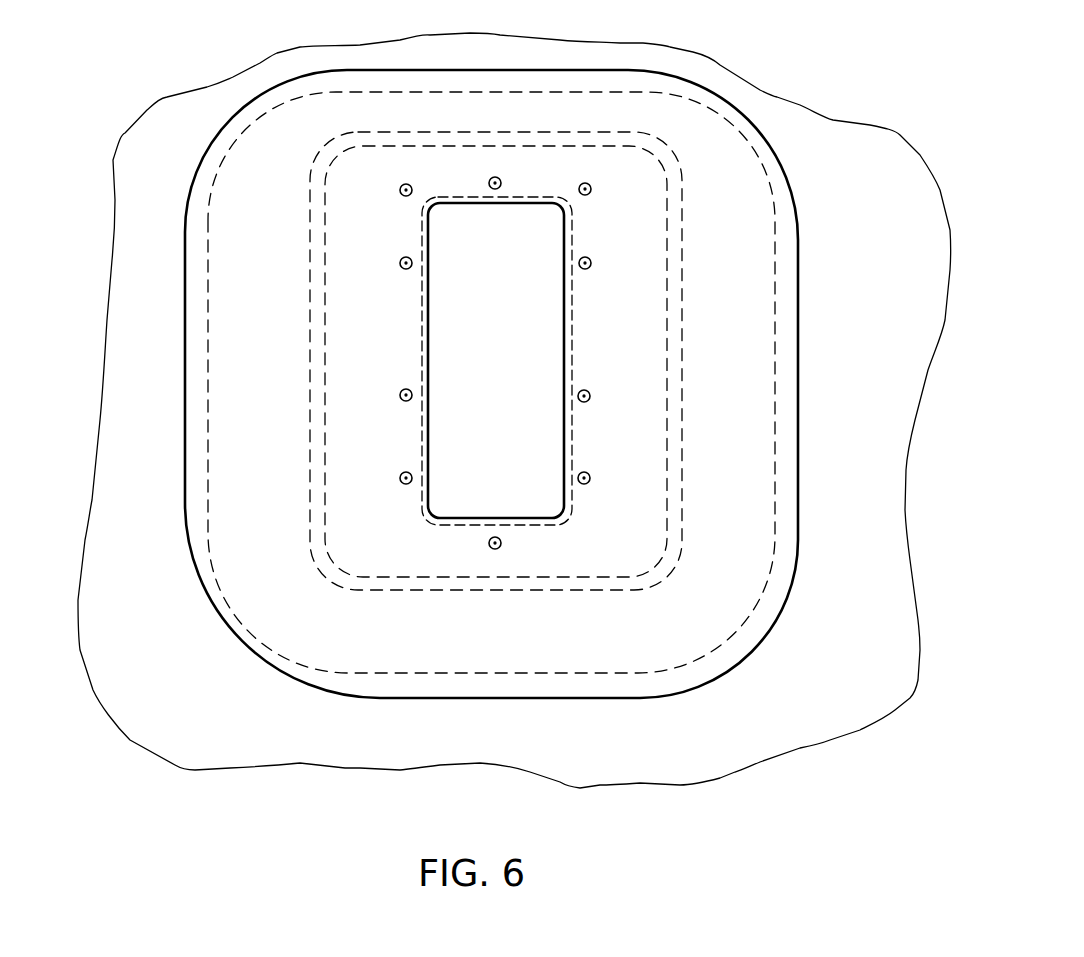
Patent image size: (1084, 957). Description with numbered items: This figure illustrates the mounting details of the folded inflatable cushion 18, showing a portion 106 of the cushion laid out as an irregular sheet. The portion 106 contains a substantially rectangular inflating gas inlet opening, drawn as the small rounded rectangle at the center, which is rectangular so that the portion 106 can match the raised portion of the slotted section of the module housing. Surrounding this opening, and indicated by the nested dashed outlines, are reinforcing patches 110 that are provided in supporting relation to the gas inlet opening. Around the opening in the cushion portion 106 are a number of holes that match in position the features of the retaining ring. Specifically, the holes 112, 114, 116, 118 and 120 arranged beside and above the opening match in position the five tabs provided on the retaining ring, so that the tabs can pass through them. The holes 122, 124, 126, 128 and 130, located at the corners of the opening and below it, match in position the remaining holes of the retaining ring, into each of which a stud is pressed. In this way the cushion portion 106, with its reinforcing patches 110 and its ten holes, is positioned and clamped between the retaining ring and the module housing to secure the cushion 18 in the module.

The folded inflatable cushion 18 is at (147, 153).
The portion 106 is at (313, 122).
The reinforcing patches 110 is at (635, 132).
The hole 112 is at (400, 264).
The hole 114 is at (400, 400).
The hole 116 is at (591, 263).
The hole 118 is at (590, 400).
The hole 120 is at (495, 176).
The hole 122 is at (400, 194).
The hole 124 is at (587, 195).
The hole 126 is at (400, 485).
The hole 128 is at (489, 544).
The hole 130 is at (590, 482).